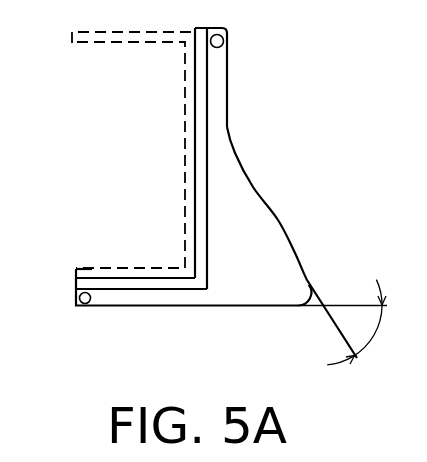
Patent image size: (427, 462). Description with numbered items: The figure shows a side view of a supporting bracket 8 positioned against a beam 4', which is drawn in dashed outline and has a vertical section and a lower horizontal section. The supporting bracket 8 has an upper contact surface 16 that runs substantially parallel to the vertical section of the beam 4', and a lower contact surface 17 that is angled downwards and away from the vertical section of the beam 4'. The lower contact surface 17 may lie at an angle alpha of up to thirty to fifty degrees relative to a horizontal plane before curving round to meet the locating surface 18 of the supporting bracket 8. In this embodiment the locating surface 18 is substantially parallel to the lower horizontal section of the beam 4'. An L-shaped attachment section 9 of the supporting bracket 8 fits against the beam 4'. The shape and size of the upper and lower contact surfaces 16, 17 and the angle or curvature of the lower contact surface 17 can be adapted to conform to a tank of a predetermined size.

The beam 4' is at (112, 150).
The upper contact surface 16 is at (229, 97).
The lower contact surface 17 is at (277, 237).
The L-shaped attachment section 9 is at (100, 286).
The locating surface 18 is at (170, 306).
The supporting bracket 8 is at (248, 292).